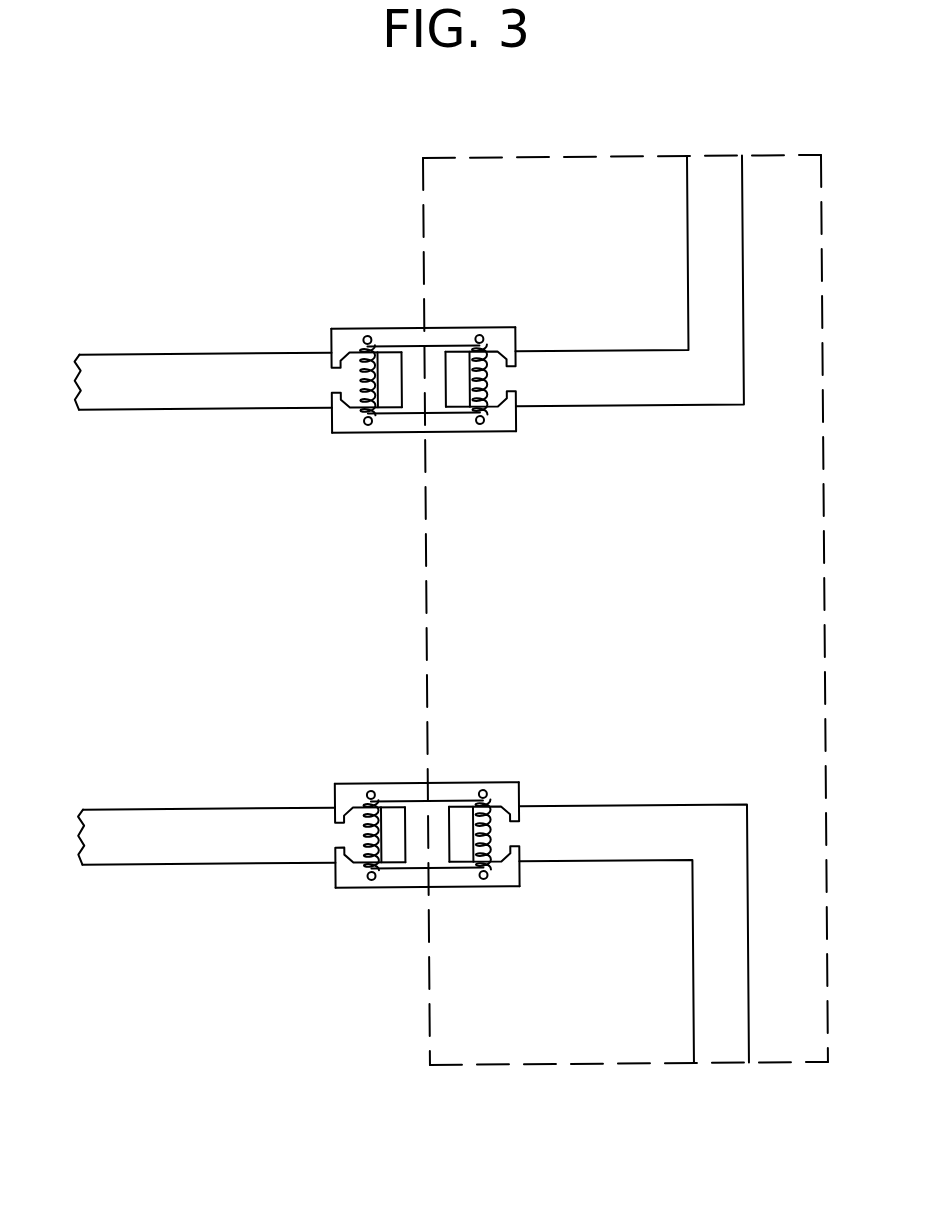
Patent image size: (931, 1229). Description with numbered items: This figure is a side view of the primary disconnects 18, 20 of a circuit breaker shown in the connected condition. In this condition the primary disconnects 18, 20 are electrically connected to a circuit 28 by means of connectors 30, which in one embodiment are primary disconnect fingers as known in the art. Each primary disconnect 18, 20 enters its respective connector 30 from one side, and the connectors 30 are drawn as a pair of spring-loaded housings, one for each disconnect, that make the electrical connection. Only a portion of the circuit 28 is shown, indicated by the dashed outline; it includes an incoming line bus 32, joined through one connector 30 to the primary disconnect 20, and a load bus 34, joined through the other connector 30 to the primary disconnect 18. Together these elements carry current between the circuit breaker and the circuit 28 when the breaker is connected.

The primary disconnect 18 is at (282, 846).
The primary disconnect 20 is at (276, 396).
The circuit 28 is at (473, 157).
The connector 30 is at (447, 333).
The incoming line bus 32 is at (623, 385).
The load bus 34 is at (625, 829).